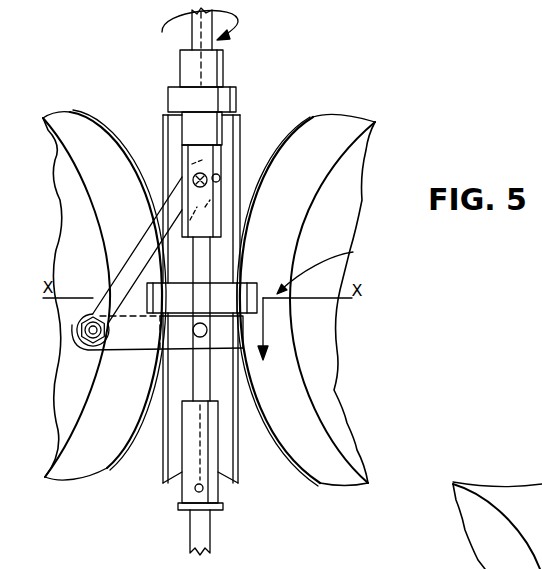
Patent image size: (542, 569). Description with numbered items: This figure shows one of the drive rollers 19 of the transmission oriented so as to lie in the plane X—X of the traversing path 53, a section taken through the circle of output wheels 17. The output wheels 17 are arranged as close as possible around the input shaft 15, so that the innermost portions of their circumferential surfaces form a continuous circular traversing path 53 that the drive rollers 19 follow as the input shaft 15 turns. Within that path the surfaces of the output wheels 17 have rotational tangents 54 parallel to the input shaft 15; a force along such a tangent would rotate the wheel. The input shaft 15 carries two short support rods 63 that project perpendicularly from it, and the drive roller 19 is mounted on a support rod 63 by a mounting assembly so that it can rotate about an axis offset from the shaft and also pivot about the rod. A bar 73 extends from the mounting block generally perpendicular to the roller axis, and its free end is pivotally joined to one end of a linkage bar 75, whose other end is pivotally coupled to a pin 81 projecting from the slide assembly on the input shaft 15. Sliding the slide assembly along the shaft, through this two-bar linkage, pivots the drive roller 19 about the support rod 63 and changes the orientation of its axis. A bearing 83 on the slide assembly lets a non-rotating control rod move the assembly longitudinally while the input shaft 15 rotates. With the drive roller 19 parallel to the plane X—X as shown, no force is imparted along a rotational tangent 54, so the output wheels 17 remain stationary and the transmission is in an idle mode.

The input shaft 15 is at (195, 393).
The output wheels 17 is at (163, 120).
The drive rollers 19 is at (243, 287).
The traversing path 53 is at (330, 268).
The rotational tangent 54 is at (265, 323).
The support rod 63 is at (215, 393).
The bar 73 is at (137, 342).
The linkage bar 75 is at (135, 238).
The pin 81 is at (212, 165).
The bearing 83 is at (238, 100).